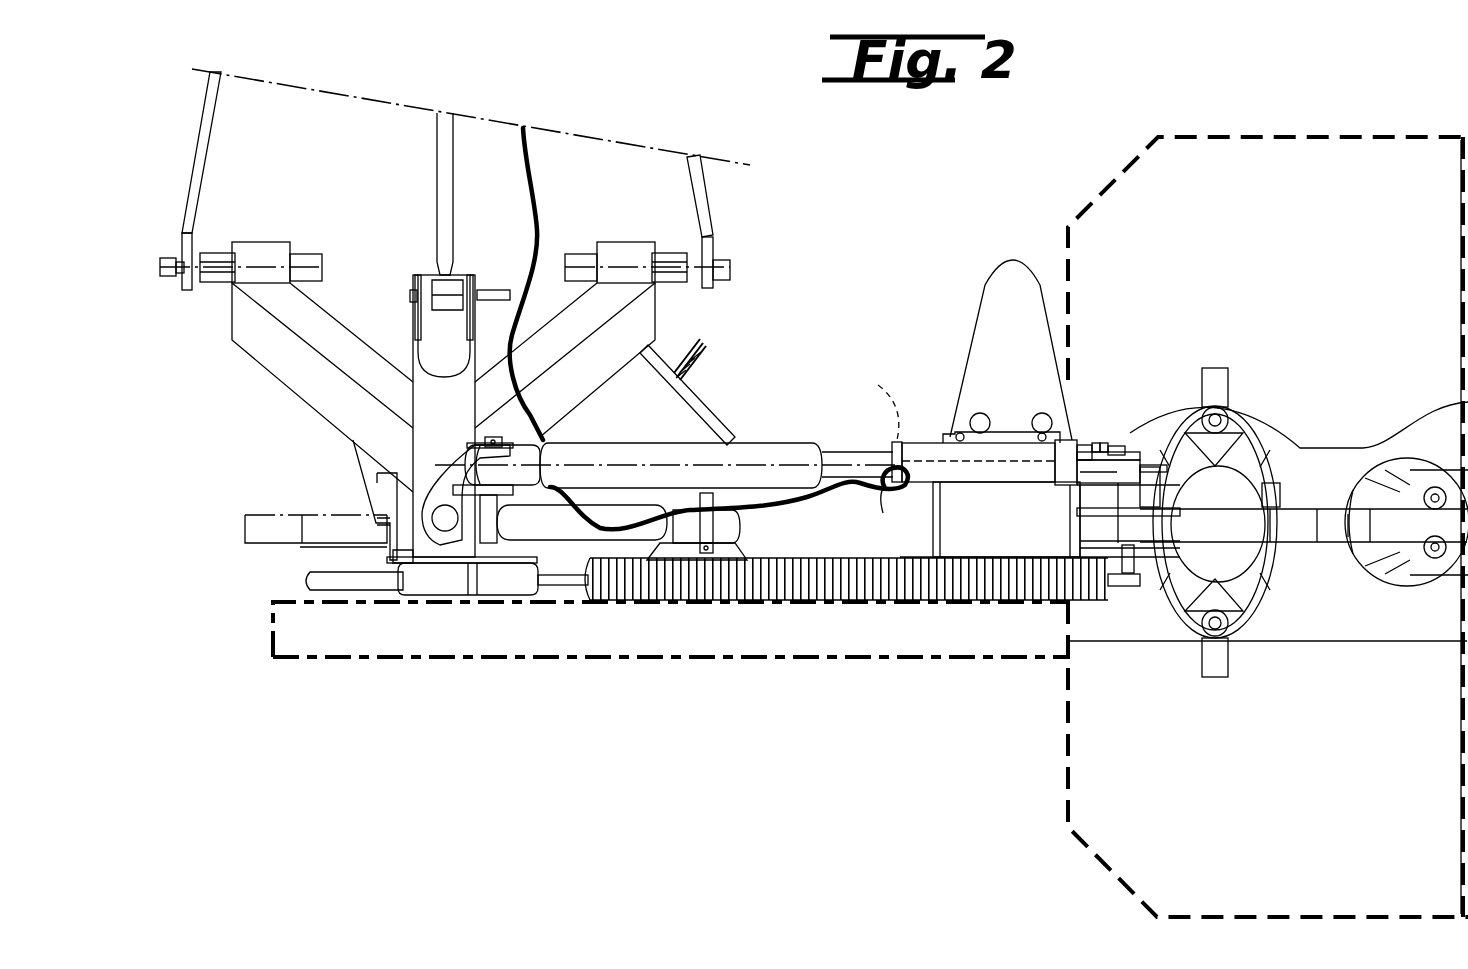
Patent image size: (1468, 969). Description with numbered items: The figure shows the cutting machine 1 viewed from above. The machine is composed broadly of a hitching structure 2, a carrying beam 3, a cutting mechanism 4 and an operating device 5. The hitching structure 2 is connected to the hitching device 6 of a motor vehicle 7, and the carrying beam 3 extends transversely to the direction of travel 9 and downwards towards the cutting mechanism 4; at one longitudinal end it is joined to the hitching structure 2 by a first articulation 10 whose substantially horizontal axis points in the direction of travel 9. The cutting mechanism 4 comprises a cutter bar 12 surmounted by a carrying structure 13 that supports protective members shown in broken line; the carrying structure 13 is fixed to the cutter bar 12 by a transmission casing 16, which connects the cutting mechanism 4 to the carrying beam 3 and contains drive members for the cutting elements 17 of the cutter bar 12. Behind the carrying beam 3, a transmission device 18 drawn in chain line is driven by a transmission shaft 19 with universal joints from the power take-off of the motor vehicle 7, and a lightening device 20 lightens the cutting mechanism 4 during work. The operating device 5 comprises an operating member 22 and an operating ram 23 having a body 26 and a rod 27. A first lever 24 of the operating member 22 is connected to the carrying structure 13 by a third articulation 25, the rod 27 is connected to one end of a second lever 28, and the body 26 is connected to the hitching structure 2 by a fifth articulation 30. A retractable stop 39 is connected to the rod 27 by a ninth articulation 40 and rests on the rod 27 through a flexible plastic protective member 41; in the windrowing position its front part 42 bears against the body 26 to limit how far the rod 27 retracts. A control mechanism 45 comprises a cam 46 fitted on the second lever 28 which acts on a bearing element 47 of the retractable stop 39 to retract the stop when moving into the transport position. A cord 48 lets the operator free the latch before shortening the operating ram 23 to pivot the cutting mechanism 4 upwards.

The cutting machine 1 is at (1000, 270).
The hitching structure 2 is at (275, 385).
The carrying beam 3 is at (835, 539).
The cutting mechanism 4 is at (1300, 428).
The operating device 5 is at (1113, 446).
The hitching device 6 is at (717, 247).
The motor vehicle 7 is at (712, 203).
The direction of travel 9 is at (1292, 28).
The first articulation 10 is at (400, 502).
The cutter bar 12 is at (1357, 627).
The carrying structure 13 is at (1330, 542).
The transmission casing 16 is at (985, 516).
The cutting elements 17 is at (1190, 617).
The transmission device 18 is at (613, 660).
The transmission shaft 19 is at (395, 203).
The lightening device 20 is at (805, 603).
The operating member 22 is at (1105, 445).
The operating ram 23 is at (773, 445).
The first lever 24 is at (1162, 470).
The third articulation 25 is at (1152, 498).
The body 26 is at (613, 455).
The rod 27 is at (855, 455).
The second lever 28 is at (958, 440).
The fifth articulation 30 is at (490, 437).
The retractable stop 39 is at (935, 452).
The ninth articulation 40 is at (1072, 450).
The protective member 41 is at (874, 397).
The front part 42 is at (898, 514).
The control mechanism 45 is at (1090, 445).
The cam 46 is at (1122, 446).
The bearing element 47 is at (1078, 445).
The cord 48 is at (523, 187).